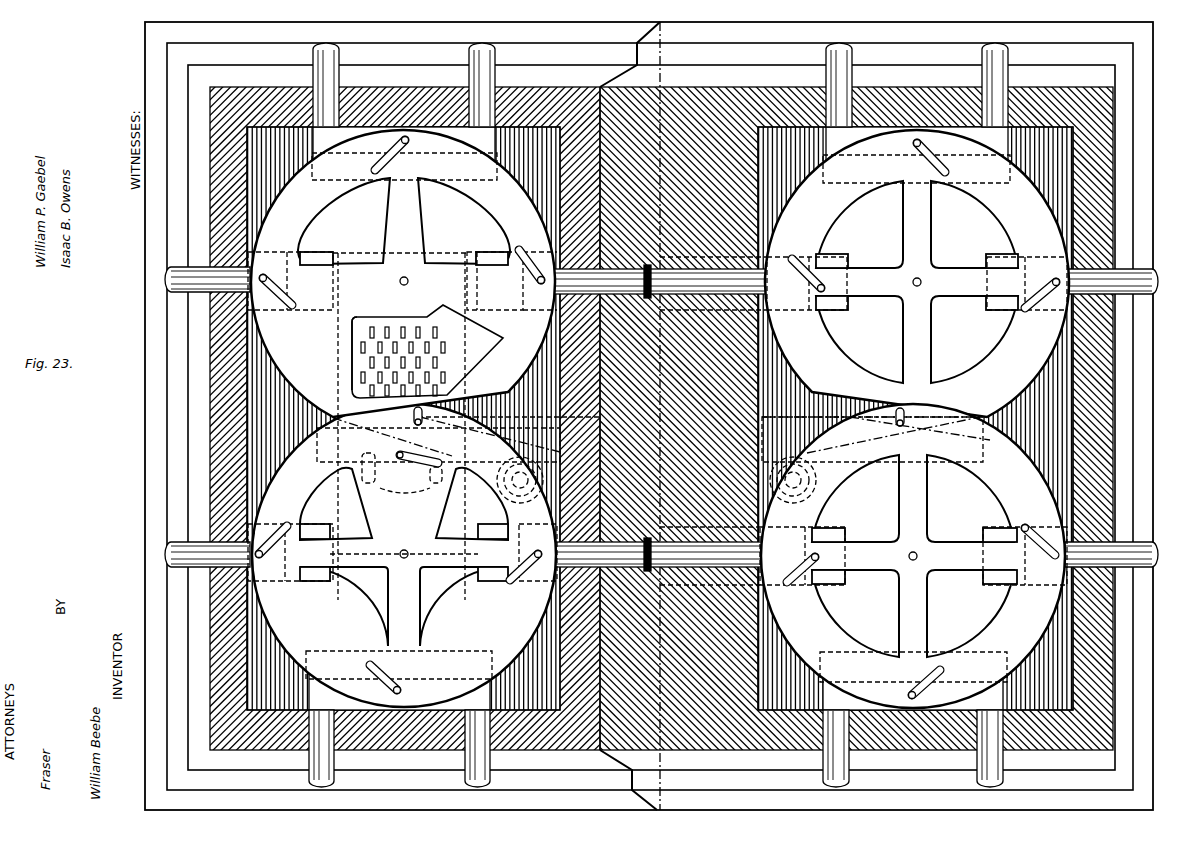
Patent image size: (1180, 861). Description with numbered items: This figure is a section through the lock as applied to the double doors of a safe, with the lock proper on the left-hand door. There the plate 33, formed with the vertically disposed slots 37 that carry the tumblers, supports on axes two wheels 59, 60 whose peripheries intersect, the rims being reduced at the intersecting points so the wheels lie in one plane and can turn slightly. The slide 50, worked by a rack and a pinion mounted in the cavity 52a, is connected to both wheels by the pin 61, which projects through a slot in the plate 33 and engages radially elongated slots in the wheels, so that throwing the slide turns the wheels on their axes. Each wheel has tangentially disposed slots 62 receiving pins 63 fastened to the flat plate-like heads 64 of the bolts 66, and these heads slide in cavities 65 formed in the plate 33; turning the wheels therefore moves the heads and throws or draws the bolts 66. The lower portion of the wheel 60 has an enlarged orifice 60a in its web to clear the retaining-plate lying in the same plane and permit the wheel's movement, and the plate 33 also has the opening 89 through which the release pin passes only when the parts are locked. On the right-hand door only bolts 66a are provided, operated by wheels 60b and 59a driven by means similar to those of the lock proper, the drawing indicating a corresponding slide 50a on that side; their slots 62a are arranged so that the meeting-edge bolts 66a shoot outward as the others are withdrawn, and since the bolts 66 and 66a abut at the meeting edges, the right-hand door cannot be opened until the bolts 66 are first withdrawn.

The plate 33 is at (427, 351).
The slots 37 is at (445, 377).
The slide 50 is at (466, 427).
The belt line 50a is at (876, 425).
The cavity 52a is at (589, 487).
The wheel 59 is at (404, 555).
The wheel 59a is at (912, 499).
The wheel 60 is at (403, 273).
The enlarged orifice 60a is at (357, 358).
The wheel 60b is at (925, 245).
The pin 61 is at (423, 422).
The tangentially-disposed slots 62 is at (388, 160).
The slots 62a is at (935, 165).
The pins 63 is at (409, 141).
The heads 64 is at (521, 293).
The cavities 65 is at (388, 180).
The bolts 66 is at (168, 280).
The bolts 66a is at (980, 781).
The opening 89 is at (416, 446).